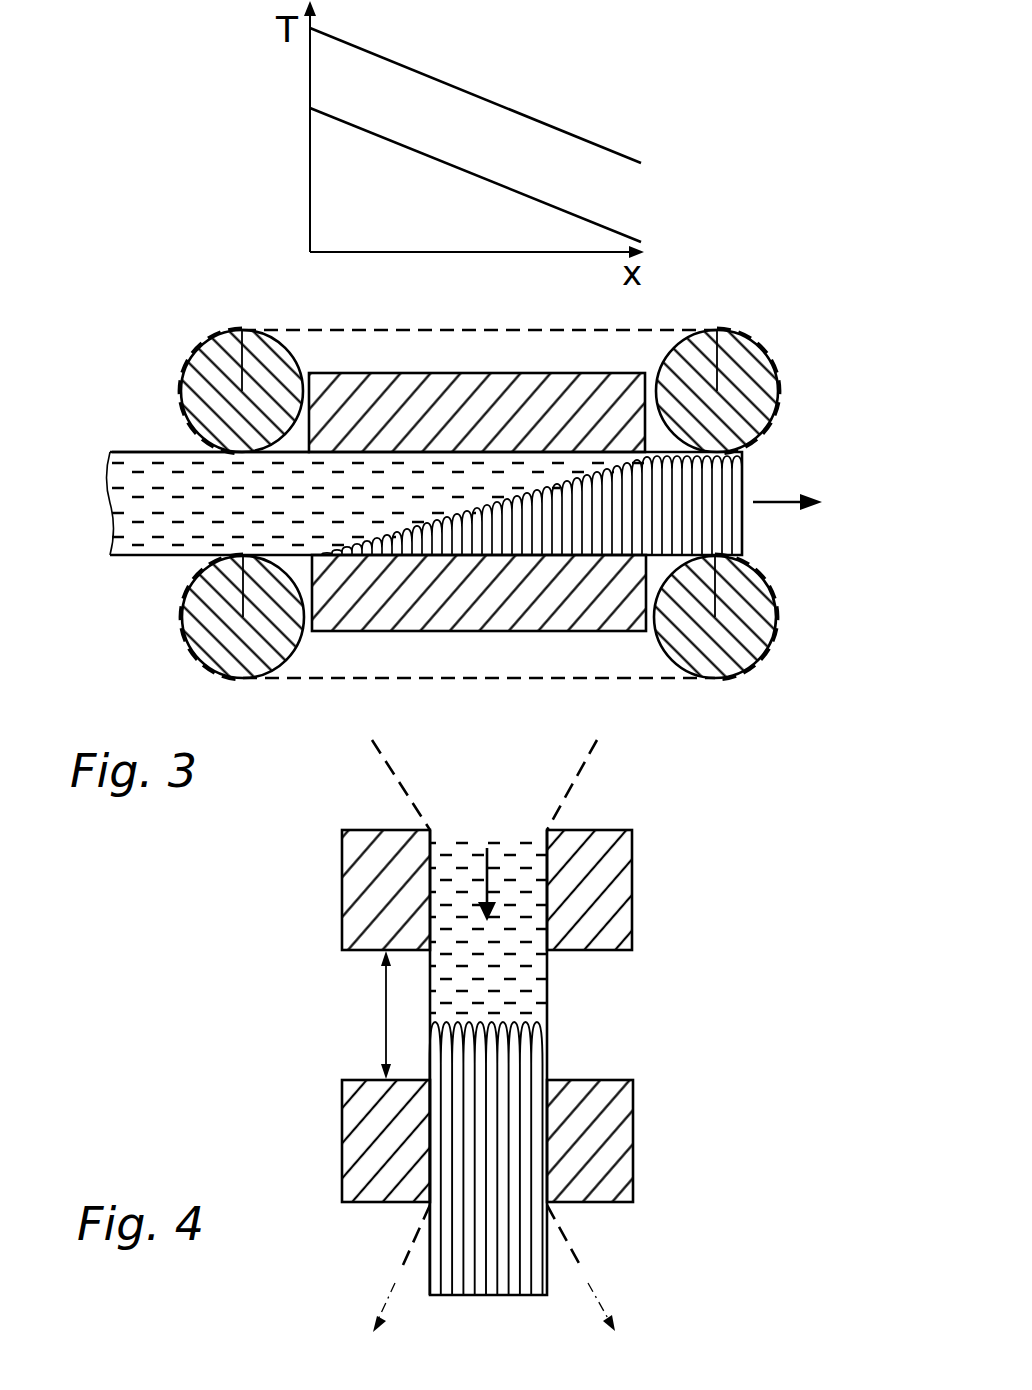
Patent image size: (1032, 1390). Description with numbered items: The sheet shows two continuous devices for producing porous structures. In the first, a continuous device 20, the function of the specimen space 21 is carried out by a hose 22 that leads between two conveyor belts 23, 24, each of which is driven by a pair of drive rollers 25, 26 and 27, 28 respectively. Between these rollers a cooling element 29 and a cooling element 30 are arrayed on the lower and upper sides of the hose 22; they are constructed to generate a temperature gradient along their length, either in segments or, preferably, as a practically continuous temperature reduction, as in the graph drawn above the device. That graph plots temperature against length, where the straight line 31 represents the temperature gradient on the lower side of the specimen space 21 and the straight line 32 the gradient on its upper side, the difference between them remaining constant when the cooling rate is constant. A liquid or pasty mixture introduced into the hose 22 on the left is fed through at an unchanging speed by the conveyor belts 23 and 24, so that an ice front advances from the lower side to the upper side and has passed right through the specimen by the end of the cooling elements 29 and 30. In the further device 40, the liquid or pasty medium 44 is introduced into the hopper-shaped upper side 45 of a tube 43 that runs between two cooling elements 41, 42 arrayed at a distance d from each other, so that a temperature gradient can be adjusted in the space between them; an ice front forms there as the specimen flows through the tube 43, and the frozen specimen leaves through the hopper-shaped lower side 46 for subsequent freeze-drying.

In FIG. 3, the continuous device 20 is at (748, 93).
In FIG. 3, the specimen space 21 is at (185, 510).
In FIG. 3, the hose 22 is at (168, 451).
In FIG. 3, the conveyor belt 23 is at (538, 678).
In FIG. 3, the conveyor belt 24 is at (612, 330).
In FIG. 3, the drive roller 25 is at (192, 637).
In FIG. 3, the drive roller 26 is at (727, 590).
In FIG. 3, the drive roller 27 is at (224, 388).
In FIG. 3, the drive roller 28 is at (727, 363).
In FIG. 3, the cooling element 29 is at (415, 583).
In FIG. 3, the cooling element 30 is at (410, 396).
In FIG. 3, the straight line 31 is at (388, 138).
In FIG. 3, the straight line 32 is at (388, 57).
In FIG. 4, the device 40 is at (752, 812).
In FIG. 4, the cooling element 41 is at (597, 868).
In FIG. 4, the cooling element 42 is at (595, 1135).
In FIG. 4, the tube 43 is at (548, 1005).
In FIG. 4, the liquid or pasty medium 44 is at (468, 855).
In FIG. 4, the hopper-shaped upper side 45 is at (400, 792).
In FIG. 4, the hopper-shaped lower side 46 is at (570, 1236).